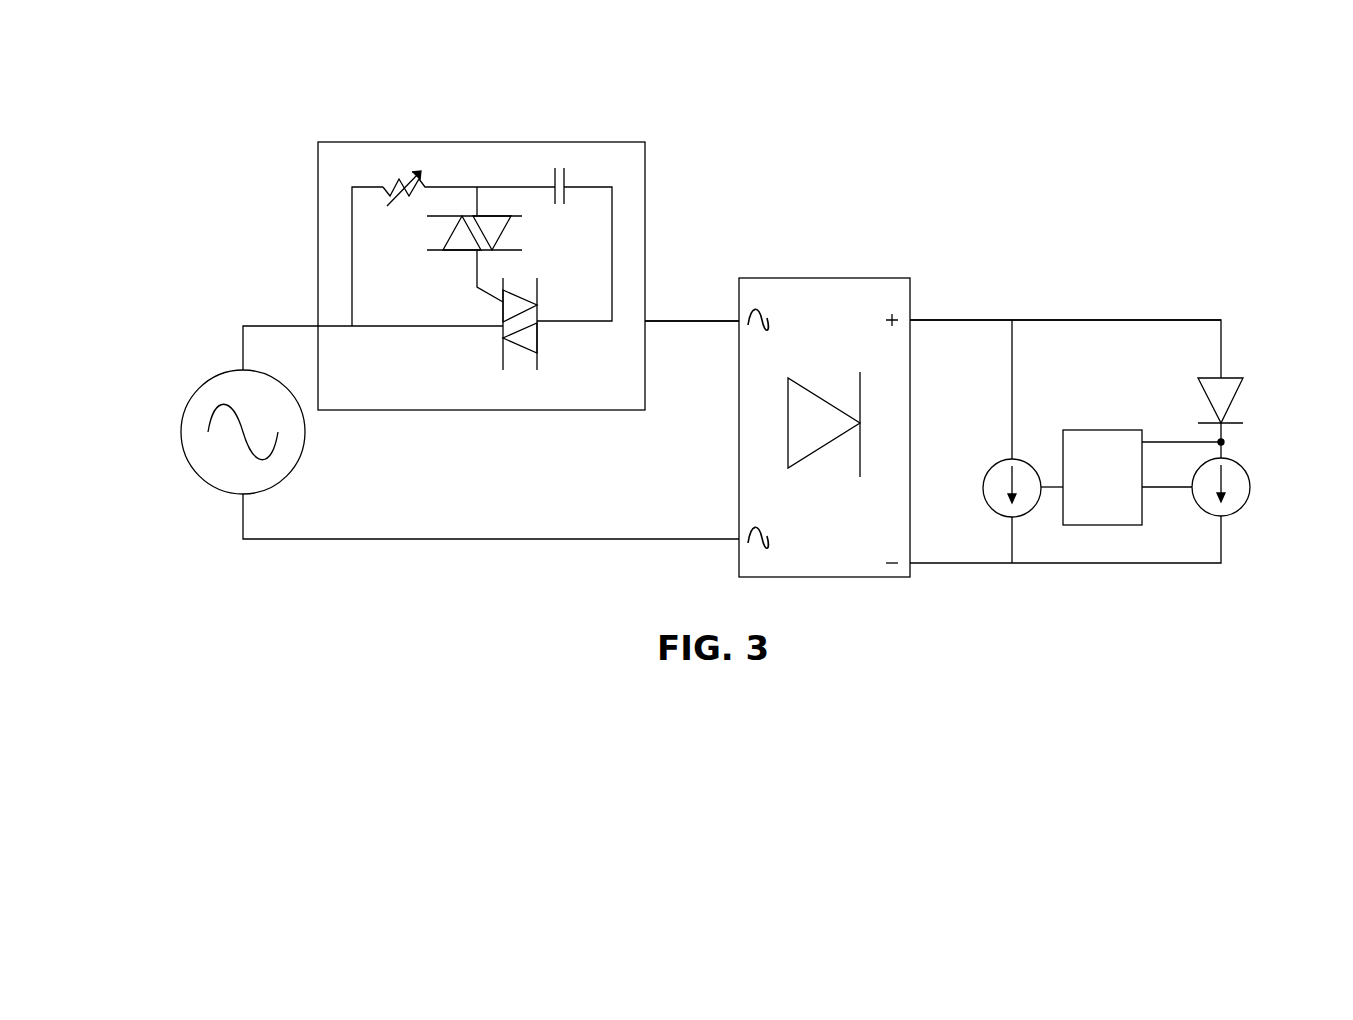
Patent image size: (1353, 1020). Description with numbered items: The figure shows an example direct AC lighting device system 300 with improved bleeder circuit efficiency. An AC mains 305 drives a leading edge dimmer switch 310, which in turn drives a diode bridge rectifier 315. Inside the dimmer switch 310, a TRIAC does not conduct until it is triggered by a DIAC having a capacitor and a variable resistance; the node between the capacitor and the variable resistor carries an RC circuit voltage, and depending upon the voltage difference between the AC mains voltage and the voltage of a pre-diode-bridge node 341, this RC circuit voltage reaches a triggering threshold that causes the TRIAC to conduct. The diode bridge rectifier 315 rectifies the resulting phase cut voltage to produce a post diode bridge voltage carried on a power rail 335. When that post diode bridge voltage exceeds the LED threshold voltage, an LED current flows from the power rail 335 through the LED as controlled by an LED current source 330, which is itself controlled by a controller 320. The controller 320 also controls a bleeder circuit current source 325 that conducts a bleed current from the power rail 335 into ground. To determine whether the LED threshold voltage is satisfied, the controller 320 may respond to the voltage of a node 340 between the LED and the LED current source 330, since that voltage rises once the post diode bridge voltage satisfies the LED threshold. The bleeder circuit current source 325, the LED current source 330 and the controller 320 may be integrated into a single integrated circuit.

The direct AC lighting device system 300 is at (789, 122).
The AC mains 305 is at (225, 490).
The leading edge dimmer switch 310 is at (318, 252).
The diode bridge rectifier 315 is at (739, 487).
The controller 320 is at (1105, 430).
The bleeder circuit current source 325 is at (1003, 463).
The LED current source 330 is at (1246, 508).
The power rail 335 is at (1140, 320).
The node 340 is at (1224, 442).
The pre-diode-bridge node 341 is at (699, 319).